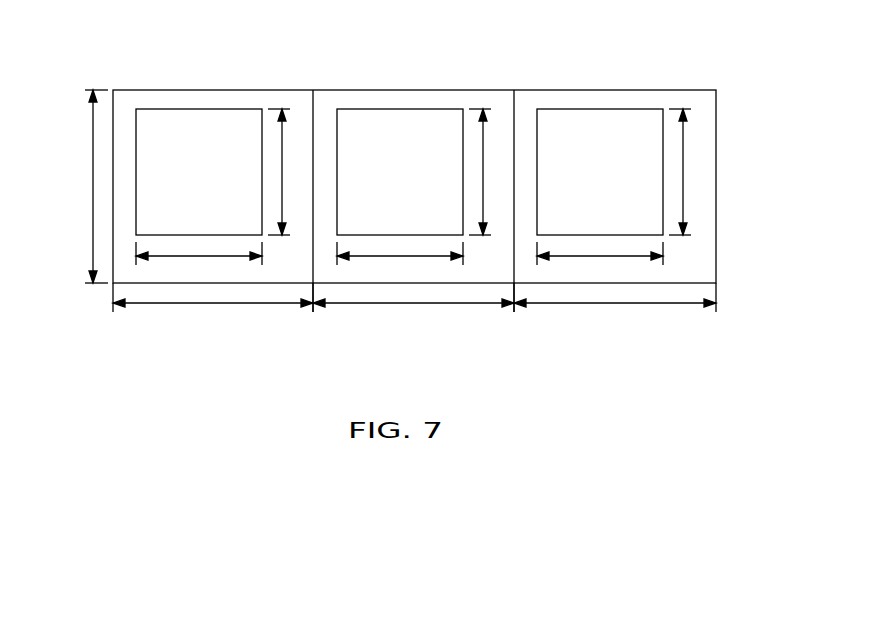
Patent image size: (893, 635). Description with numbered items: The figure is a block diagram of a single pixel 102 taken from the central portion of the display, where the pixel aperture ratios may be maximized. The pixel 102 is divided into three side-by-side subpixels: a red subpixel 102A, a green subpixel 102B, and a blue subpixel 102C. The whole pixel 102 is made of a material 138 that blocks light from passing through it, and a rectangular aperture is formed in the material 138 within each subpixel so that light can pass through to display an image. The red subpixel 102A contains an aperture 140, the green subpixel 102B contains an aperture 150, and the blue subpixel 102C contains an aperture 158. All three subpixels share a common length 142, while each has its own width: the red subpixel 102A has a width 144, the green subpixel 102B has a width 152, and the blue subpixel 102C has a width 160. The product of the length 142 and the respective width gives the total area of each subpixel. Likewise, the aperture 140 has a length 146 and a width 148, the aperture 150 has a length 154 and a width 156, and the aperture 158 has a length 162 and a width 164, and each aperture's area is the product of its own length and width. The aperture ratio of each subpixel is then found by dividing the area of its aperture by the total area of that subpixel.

The pixel 102 is at (116, 40).
The red subpixel 102A is at (168, 350).
The green subpixel 102B is at (368, 350).
The blue subpixel 102C is at (570, 350).
The material 138 is at (716, 175).
The aperture 140 is at (197, 109).
The length 142 is at (92, 181).
The width 144 is at (230, 305).
The length 146 is at (283, 136).
The width 148 is at (172, 257).
The aperture 150 is at (398, 109).
The width 152 is at (430, 305).
The length 154 is at (484, 136).
The width 156 is at (403, 257).
The aperture 158 is at (598, 109).
The width 160 is at (633, 305).
The length 162 is at (684, 136).
The width 164 is at (605, 257).